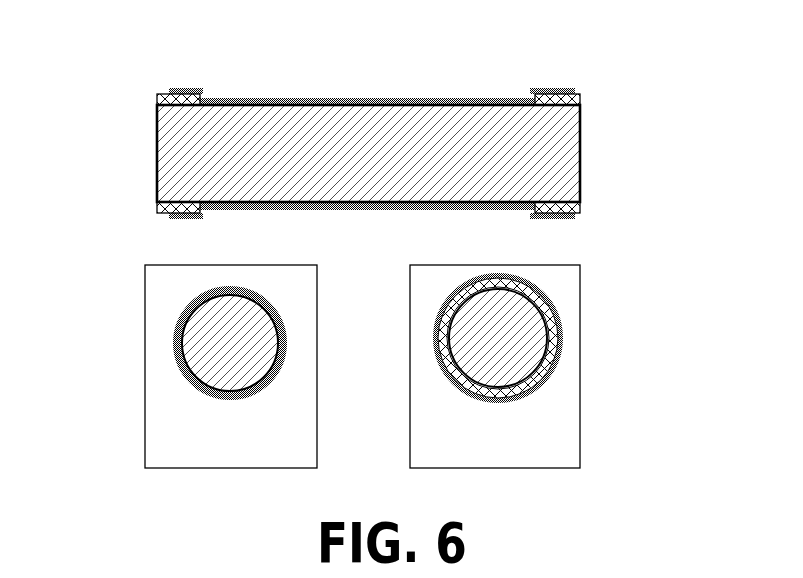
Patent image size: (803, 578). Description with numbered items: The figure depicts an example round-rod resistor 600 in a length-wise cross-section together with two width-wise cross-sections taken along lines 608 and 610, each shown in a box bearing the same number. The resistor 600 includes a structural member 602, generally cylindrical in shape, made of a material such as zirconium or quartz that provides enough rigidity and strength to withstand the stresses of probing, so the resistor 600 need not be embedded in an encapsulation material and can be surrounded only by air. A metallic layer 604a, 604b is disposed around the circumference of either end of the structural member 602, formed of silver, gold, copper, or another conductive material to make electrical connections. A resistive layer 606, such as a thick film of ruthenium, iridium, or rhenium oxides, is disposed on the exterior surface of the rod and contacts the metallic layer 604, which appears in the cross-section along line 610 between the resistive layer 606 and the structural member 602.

The resistor 600 is at (210, 49).
The structural member 602 is at (377, 127).
The metallic layer 604 is at (497, 393).
The metallic layer 604a is at (157, 207).
The metallic layer 604b is at (580, 205).
The resistive layer 606 is at (450, 98).
The line 608 is at (287, 232).
The line 610 is at (553, 232).